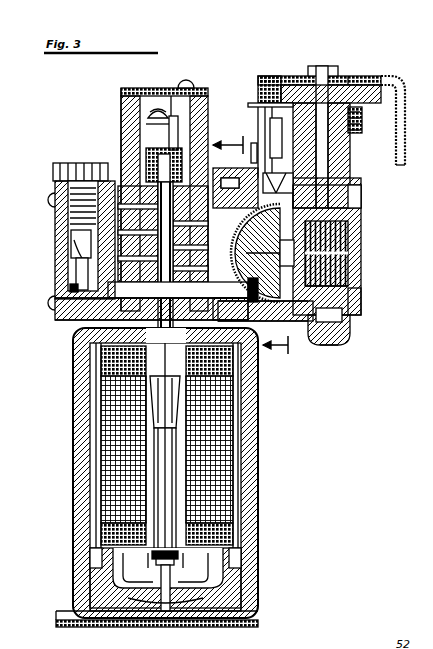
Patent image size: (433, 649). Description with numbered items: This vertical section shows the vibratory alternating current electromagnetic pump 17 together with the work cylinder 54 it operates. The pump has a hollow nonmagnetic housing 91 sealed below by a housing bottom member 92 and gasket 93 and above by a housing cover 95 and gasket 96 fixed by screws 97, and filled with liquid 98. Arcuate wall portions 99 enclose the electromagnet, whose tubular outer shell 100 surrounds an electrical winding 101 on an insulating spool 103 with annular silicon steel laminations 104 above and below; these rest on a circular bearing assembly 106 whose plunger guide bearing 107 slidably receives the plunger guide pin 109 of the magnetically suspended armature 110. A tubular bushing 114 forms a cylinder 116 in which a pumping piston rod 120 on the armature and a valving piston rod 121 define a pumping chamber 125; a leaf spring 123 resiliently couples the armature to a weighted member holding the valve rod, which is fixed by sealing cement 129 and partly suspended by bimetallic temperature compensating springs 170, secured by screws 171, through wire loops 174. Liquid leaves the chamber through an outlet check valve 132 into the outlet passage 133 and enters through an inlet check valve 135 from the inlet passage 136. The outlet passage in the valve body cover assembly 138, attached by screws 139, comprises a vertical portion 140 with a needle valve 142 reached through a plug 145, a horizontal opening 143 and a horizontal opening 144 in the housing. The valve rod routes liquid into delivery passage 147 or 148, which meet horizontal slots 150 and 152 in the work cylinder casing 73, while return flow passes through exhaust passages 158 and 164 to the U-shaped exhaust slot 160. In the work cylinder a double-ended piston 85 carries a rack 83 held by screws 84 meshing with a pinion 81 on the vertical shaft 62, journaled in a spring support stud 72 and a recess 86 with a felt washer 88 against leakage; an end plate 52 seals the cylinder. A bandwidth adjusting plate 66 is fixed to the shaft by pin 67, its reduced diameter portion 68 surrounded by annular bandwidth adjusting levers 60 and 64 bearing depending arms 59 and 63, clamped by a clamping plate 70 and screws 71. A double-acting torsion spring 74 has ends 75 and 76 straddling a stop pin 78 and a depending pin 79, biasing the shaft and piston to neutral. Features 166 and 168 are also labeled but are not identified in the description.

The vibratory alternating current electromagnetic pump 17 is at (47, 474).
The end plate 52 is at (222, 165).
The work cylinder 54 is at (290, 300).
The depending arm 59 is at (386, 150).
The annular bandwidth adjusting lever 60 is at (250, 88).
The vertical shaft 62 is at (320, 136).
The depending arm 63 is at (399, 150).
The annular bandwidth adjusting lever 64 is at (250, 70).
The bandwidth adjusting plate 66 is at (352, 102).
The pin 67 is at (302, 64).
The reduced diameter circular portion 68 is at (345, 68).
The bandwidth adjusting clamping plate 70 is at (275, 68).
The screws 71 is at (316, 58).
The spring support stud 72 is at (338, 160).
The work cylinder casing 73 is at (342, 300).
The double-acting torsion spring 74 is at (352, 116).
The end of torsion spring 75 is at (245, 96).
The end of torsion spring 76 is at (250, 115).
The stop pin 78 is at (256, 172).
The depending pin 79 is at (278, 183).
The pinion 81 is at (353, 283).
The rack 83 is at (342, 217).
The screws 84 is at (342, 243).
The double-ended piston 85 is at (345, 267).
The recess 86 is at (340, 326).
The felt washer 88 is at (353, 193).
The pump housing 91 is at (113, 97).
The housing bottom member 92 is at (52, 619).
The gasket 93 is at (93, 612).
The housing cover 95 is at (120, 80).
The gasket 96 is at (113, 82).
The screws 97 is at (178, 72).
The liquid 98 is at (152, 86).
The arcuate wall portions 99 is at (72, 405).
The tubular outer shell 100 is at (90, 430).
The electrical winding 101 is at (93, 490).
The insulating spool 103 is at (90, 510).
The annular silicon steel laminations 104 is at (93, 354).
The circular bearing assembly 106 is at (85, 575).
The plunger guide bearing 107 is at (185, 622).
The plunger guide pin 109 is at (158, 605).
The plunger or armature 110 is at (168, 450).
The tubular bushing 114 is at (144, 262).
The cylinder 116 is at (190, 258).
The pumping piston rod 120 is at (172, 375).
The valving piston rod 121 is at (150, 190).
The leaf spring 123 is at (172, 560).
The pumping chamber 125 is at (156, 282).
The sealing cement 129 is at (138, 146).
The outlet check valve 132 is at (90, 305).
The outlet passage 133 is at (62, 278).
The inlet check valve 135 is at (238, 282).
The inlet passage 136 is at (220, 312).
The valve body cover assembly 138 is at (43, 292).
The screws 139 is at (42, 192).
The vertical portion of outlet passage 140 is at (68, 260).
The needle valve 142 is at (66, 240).
The horizontal opening 143 is at (63, 230).
The horizontal opening 144 is at (138, 245).
The plug 145 is at (52, 155).
The delivery passage 147 is at (190, 234).
The delivery passage 148 is at (190, 235).
The horizontal slot 150 is at (255, 253).
The horizontal slot 152 is at (273, 252).
The exhaust passage 158 is at (138, 271).
The U-shaped exhaust slot 160 is at (80, 176).
The exhaust passage 164 is at (138, 234).
The passage 166 is at (263, 263).
The base 168 is at (248, 300).
The bimetallic temperature compensating spring 170 is at (158, 124).
The screws 171 is at (142, 104).
The wire loop 174 is at (170, 118).